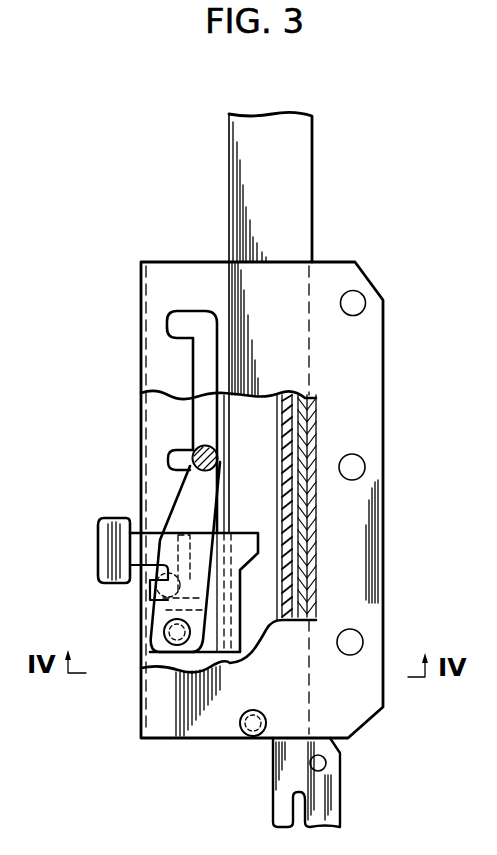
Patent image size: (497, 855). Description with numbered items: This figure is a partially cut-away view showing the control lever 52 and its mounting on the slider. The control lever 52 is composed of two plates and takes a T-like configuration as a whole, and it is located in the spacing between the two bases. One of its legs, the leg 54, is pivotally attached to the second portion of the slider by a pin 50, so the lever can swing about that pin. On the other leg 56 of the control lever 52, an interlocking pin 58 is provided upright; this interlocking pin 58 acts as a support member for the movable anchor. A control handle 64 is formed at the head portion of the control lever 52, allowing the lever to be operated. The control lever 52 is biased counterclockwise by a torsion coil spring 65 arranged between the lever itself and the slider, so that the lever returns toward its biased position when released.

The pin 50 is at (167, 641).
The control lever 52 is at (168, 503).
The leg 54 is at (167, 618).
The leg 56 is at (183, 483).
The interlocking pin 58 is at (197, 444).
The control handle 64 is at (108, 562).
The torsion coil spring 65 is at (185, 573).